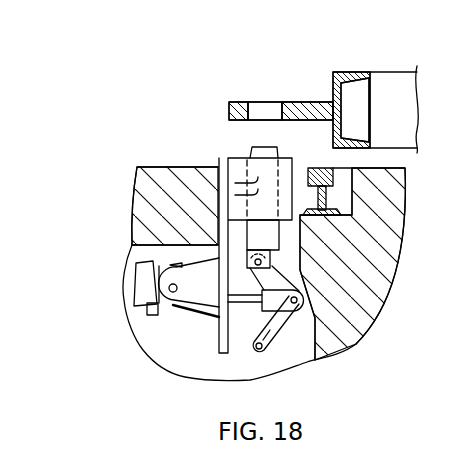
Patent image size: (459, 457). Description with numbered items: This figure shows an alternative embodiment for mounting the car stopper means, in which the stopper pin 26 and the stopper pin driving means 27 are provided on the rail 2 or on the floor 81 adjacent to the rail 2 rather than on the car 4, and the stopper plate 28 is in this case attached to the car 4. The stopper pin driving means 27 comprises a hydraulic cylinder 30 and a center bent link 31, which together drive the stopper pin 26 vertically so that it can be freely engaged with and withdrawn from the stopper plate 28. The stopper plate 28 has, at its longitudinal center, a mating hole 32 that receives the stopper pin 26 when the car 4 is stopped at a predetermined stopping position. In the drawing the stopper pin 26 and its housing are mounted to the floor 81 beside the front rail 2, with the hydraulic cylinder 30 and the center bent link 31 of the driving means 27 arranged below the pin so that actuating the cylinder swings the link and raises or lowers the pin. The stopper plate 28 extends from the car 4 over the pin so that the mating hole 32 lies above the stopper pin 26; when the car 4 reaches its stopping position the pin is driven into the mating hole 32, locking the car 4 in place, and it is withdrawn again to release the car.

The front rail 2 is at (320, 167).
The car 4 is at (388, 85).
The stopper pin 26 is at (253, 148).
The stopper pin driving means 27 is at (63, 330).
The stopper plate 28 is at (233, 103).
The hydraulic cylinder 30 is at (143, 303).
The center bent link 31 is at (257, 353).
The mating hole 32 is at (269, 102).
The floor 81 is at (158, 166).